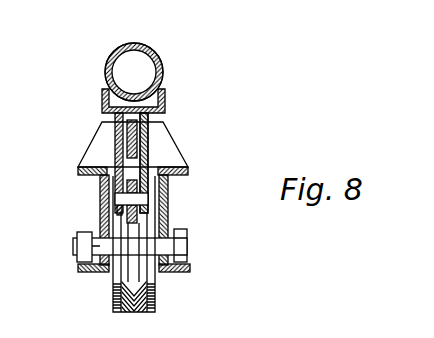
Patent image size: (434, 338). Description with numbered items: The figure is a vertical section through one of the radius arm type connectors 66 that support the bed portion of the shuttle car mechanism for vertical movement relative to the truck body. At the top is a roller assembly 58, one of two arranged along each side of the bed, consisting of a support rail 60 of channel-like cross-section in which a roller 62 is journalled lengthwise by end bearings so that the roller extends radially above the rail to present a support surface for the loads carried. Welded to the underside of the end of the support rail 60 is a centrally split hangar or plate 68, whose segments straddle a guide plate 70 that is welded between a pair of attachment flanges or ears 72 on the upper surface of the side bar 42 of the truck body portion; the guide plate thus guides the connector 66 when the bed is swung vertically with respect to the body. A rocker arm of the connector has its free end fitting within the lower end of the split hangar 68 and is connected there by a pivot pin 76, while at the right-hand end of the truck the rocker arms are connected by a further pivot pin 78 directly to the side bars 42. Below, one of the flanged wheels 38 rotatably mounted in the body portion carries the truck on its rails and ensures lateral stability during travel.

The roller assembly 58 is at (108, 42).
The roller 62 is at (158, 53).
The support rail 60 is at (167, 95).
The radius arm type connector 66 is at (95, 156).
The attachment flange 72 is at (115, 126).
The split hangar plate 68 is at (148, 153).
The guide plate 70 is at (137, 135).
The pivot pin 76 is at (118, 199).
The side bar 42 is at (165, 213).
The pivot pin 78 is at (147, 250).
The wheel 38 is at (113, 287).